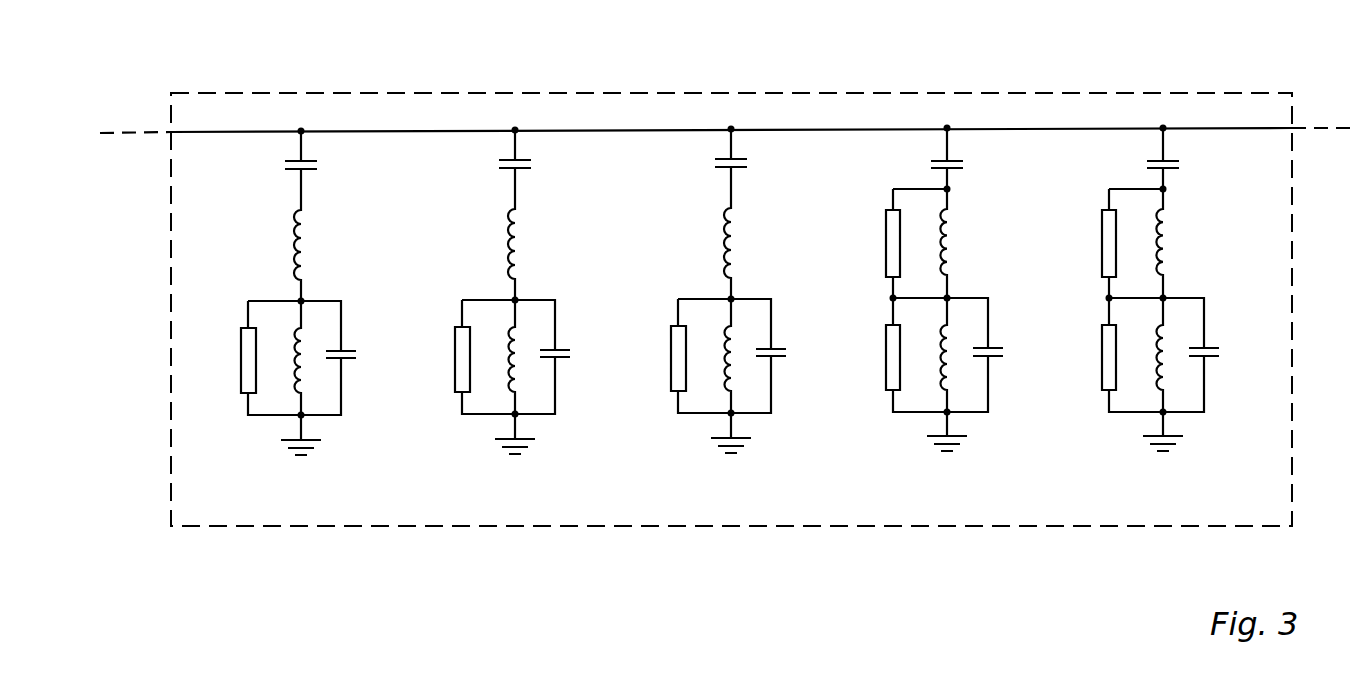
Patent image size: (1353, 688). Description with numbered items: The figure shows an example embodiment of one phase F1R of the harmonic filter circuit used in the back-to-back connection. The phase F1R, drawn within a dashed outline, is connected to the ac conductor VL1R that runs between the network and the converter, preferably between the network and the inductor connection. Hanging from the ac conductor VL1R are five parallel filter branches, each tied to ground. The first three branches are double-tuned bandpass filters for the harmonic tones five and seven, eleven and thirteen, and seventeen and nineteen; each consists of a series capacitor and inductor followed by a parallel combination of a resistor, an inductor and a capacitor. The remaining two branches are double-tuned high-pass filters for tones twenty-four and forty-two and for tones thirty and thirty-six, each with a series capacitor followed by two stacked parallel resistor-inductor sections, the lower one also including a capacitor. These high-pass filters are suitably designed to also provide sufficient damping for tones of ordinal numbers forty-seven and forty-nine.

The ac conductor VL1R is at (635, 130).
The phase of the filter circuit F1R is at (233, 513).